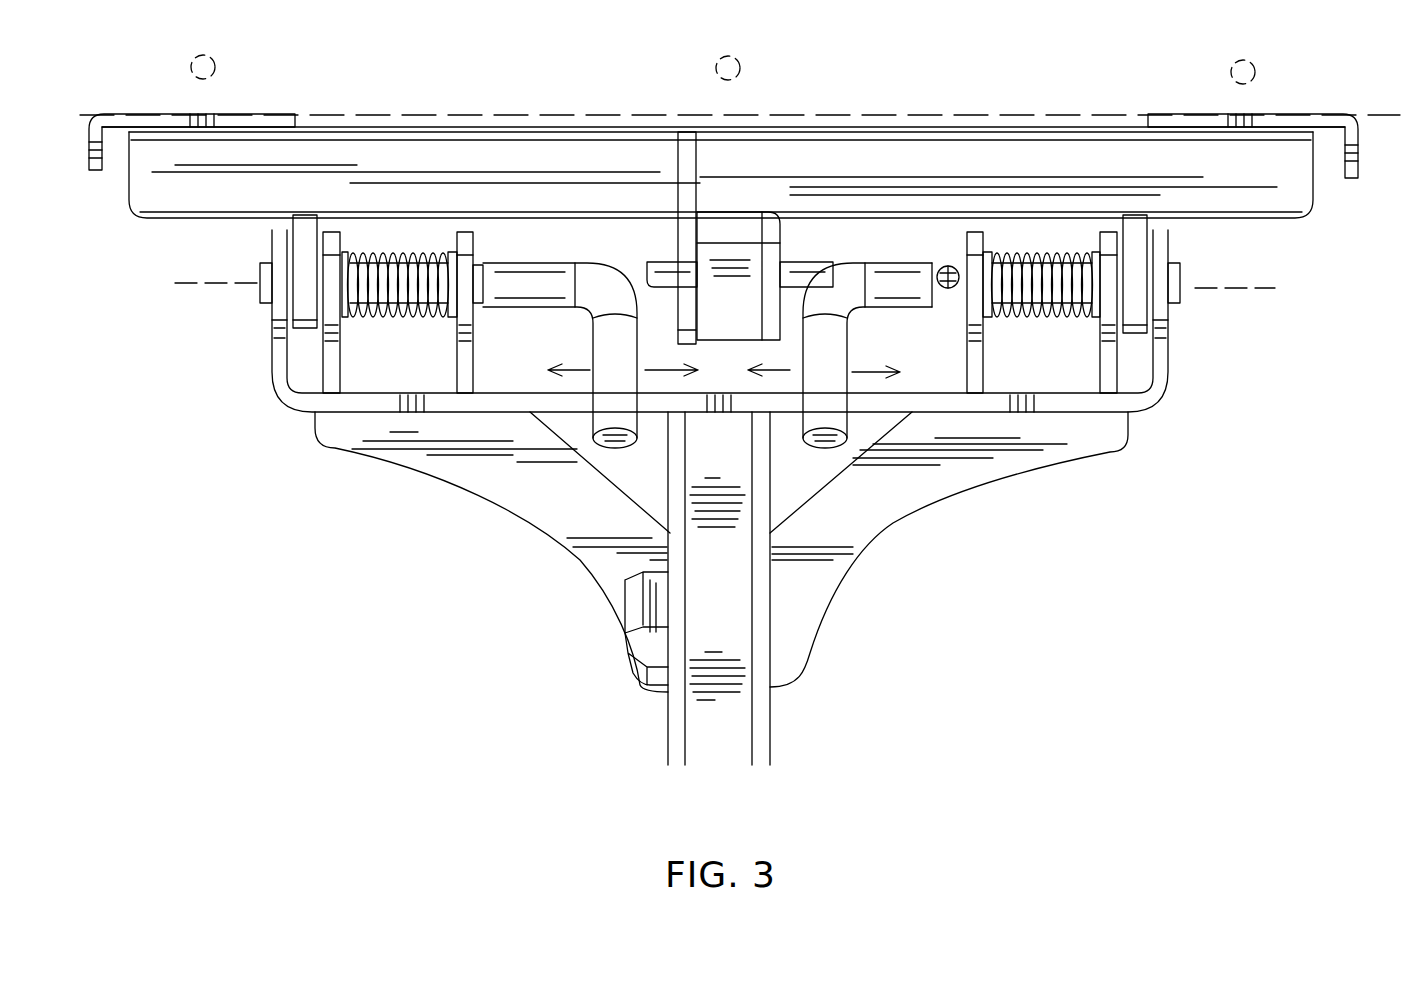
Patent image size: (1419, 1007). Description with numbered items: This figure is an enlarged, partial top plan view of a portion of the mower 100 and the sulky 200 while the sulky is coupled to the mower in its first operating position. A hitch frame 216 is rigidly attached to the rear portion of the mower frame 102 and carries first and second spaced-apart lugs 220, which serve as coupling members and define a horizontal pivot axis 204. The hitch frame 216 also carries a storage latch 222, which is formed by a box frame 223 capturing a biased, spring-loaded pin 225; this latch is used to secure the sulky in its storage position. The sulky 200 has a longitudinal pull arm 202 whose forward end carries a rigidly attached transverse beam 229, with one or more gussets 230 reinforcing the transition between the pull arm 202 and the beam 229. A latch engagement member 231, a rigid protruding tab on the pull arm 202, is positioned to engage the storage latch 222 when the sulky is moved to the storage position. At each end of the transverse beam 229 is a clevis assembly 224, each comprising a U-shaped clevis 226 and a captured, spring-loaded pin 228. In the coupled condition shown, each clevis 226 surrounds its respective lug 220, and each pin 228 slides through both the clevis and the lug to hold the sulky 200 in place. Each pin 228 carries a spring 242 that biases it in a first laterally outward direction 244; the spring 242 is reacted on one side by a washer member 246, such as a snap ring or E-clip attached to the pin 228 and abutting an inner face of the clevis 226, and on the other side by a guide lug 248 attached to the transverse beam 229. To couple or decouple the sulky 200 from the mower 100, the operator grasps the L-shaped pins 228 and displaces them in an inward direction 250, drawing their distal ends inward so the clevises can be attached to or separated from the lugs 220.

The mower 100 is at (603, 78).
The frame 102 is at (478, 72).
The sulky 200 is at (793, 731).
The pull arm 202 is at (700, 745).
The horizontal pivot axis 204 is at (218, 240).
The hitch frame 216 is at (150, 114).
The lugs 220 is at (318, 218).
The storage latch 222 is at (720, 205).
The box frame 223 is at (742, 212).
The clevis assemblies 224 is at (251, 382).
The pin 225 is at (880, 258).
The U-shaped clevis 226 is at (270, 365).
The spring-loaded pin 228 is at (537, 263).
The transverse beam 229 is at (555, 412).
The gussets 230 is at (423, 470).
The latch engagement member 231 is at (625, 612).
The spring 242 is at (360, 262).
The first laterally outward direction 244 is at (573, 370).
The washer member 246 is at (343, 357).
The guide lug 248 is at (440, 366).
The inward direction 250 is at (658, 372).